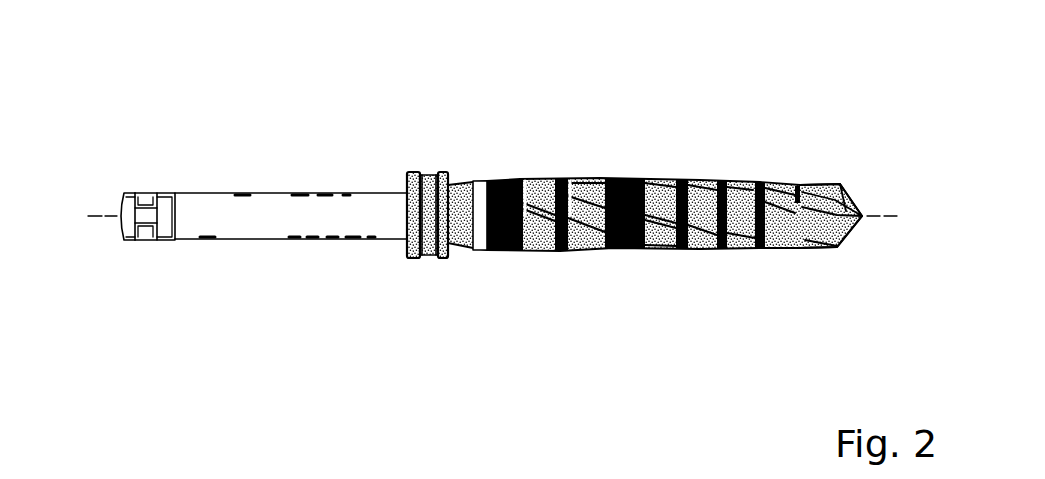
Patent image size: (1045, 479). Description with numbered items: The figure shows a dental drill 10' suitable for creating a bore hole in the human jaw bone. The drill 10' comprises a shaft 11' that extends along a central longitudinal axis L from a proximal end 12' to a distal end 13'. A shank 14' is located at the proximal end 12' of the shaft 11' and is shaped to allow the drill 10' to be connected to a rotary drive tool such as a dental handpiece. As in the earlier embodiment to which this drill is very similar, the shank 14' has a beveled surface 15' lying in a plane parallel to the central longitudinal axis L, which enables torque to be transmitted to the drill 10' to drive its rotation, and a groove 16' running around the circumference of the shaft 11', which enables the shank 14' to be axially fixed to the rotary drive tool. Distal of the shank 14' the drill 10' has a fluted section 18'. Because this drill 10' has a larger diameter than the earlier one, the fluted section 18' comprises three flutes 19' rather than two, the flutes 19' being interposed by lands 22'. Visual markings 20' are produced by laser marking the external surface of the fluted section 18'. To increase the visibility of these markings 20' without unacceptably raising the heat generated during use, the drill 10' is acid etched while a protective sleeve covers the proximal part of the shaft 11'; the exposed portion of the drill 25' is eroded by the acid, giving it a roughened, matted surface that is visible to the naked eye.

The drill 10' is at (474, 211).
The shaft 11' is at (291, 171).
The proximal end 12' is at (82, 195).
The distal end 13' is at (843, 177).
The shank 14' is at (105, 220).
The beveled surface 15' is at (112, 272).
The groove 16' is at (158, 172).
The fluted section 18' is at (667, 240).
The flutes 19' is at (653, 256).
The visual markings 20' is at (643, 164).
The lands 22' is at (648, 276).
The exposed portion of the drill 25' is at (643, 211).